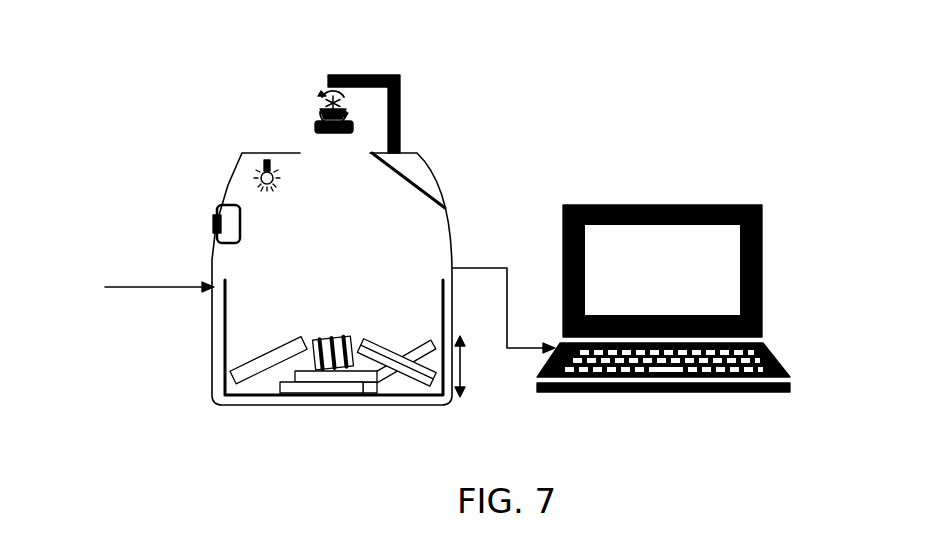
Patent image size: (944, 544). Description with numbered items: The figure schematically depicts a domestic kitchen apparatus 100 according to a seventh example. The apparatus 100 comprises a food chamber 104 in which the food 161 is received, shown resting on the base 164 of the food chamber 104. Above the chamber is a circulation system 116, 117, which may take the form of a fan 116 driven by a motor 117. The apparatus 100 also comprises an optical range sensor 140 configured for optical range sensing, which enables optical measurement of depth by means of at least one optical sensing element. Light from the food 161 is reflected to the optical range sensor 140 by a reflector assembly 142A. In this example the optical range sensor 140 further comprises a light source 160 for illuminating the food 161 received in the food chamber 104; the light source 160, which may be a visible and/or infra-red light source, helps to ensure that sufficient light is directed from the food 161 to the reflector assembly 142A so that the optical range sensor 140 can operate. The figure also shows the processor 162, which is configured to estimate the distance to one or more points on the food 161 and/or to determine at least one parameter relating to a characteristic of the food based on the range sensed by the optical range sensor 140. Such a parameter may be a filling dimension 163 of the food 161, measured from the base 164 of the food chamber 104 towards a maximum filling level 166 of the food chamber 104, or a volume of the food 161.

The domestic kitchen apparatus 100 is at (161, 83).
The food chamber 104 is at (248, 328).
The fan 116 is at (338, 100).
The motor 117 is at (364, 114).
The optical range sensor 140 is at (230, 225).
The reflector assembly 142A is at (405, 175).
The light source 160 is at (267, 160).
The food 161 is at (337, 368).
The processor 162 is at (735, 238).
The filling dimension 163 is at (460, 362).
The base 164 is at (370, 394).
The maximum filling level 166 is at (125, 287).